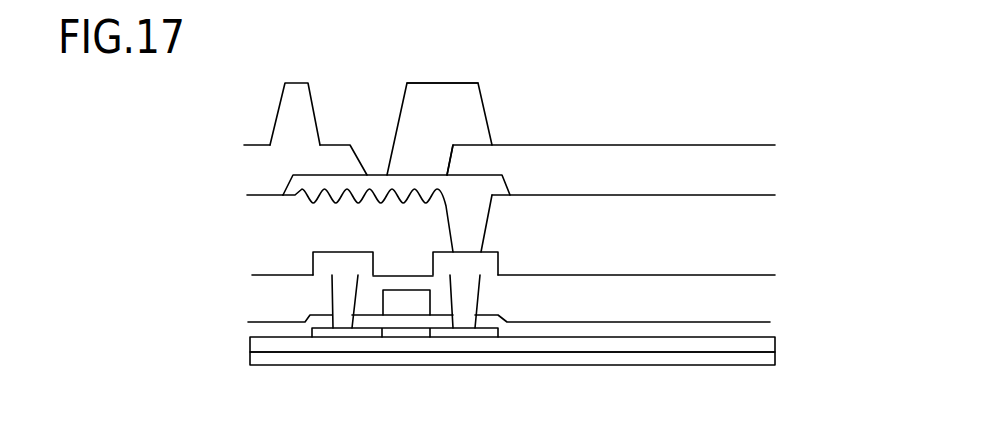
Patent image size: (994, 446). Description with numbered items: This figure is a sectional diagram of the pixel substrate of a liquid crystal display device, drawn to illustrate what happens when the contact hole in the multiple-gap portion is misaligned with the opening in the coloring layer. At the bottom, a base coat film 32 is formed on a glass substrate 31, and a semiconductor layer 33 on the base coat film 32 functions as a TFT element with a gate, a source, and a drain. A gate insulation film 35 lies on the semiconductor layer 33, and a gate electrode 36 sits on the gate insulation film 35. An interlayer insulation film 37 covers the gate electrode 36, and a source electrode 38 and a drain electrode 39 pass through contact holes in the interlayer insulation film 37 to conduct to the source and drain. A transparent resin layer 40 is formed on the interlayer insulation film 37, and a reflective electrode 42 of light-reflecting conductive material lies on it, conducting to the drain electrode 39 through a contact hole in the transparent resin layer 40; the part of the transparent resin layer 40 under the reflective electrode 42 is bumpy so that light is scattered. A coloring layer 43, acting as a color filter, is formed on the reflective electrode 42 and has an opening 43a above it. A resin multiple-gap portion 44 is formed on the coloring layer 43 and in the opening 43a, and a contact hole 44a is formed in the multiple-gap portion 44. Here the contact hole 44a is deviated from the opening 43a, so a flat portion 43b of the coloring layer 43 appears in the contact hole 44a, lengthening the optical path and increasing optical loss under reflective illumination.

The glass substrate 31 is at (762, 357).
The base coat film 32 is at (767, 345).
The semiconductor layer 33 is at (413, 333).
The gate insulation film 35 is at (613, 330).
The gate electrode 36 is at (397, 300).
The interlayer insulation film 37 is at (608, 283).
The source electrode 38 is at (347, 263).
The drain electrode 39 is at (487, 265).
The transparent resin layer 40 is at (692, 208).
The reflective electrode 42 is at (492, 190).
The coloring layer 43 is at (660, 158).
The opening 43a is at (447, 163).
The flat portion 43b is at (335, 142).
The multiple-gap portion 44 is at (468, 113).
The contact hole 44a is at (400, 113).